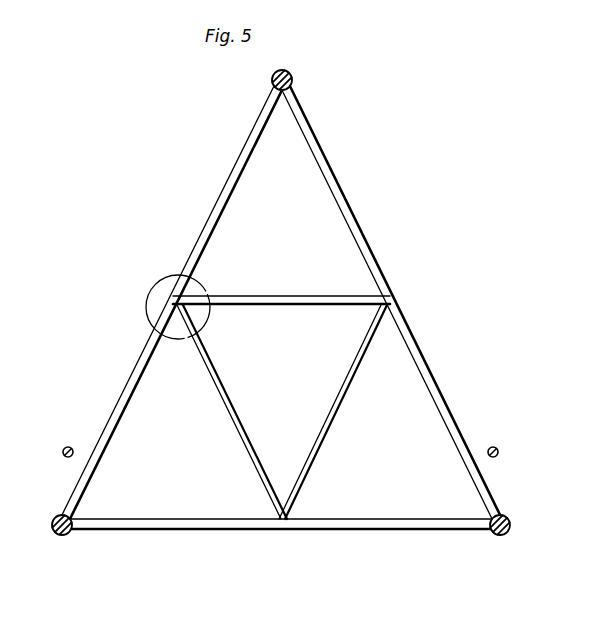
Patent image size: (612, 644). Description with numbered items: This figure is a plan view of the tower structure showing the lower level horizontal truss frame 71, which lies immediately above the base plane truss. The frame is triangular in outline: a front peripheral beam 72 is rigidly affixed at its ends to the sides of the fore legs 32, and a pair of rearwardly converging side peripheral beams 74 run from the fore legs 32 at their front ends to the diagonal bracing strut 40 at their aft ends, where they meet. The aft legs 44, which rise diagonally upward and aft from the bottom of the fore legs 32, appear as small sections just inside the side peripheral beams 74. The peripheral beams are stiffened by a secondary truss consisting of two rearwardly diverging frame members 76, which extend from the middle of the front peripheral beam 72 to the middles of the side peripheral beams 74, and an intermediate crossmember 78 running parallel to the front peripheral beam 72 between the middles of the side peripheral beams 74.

The fore legs 32 is at (62, 536).
The diagonal bracing strut 40 is at (293, 79).
The aft legs 44 is at (62, 452).
The lower level horizontal truss frame 71 is at (281, 320).
The front peripheral beam 72 is at (391, 530).
The side peripheral beams 74 is at (143, 353).
The frame members 76 is at (220, 393).
The intermediate crossmember 78 is at (275, 296).